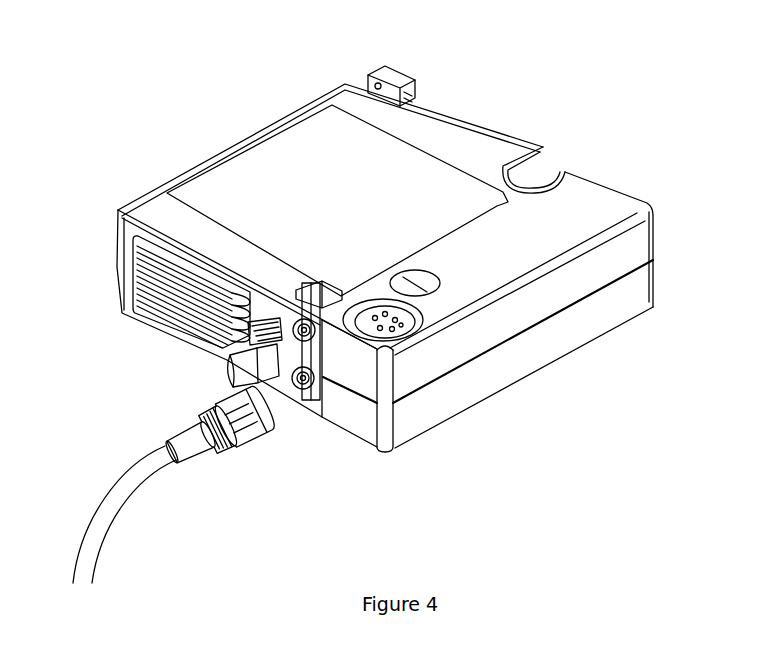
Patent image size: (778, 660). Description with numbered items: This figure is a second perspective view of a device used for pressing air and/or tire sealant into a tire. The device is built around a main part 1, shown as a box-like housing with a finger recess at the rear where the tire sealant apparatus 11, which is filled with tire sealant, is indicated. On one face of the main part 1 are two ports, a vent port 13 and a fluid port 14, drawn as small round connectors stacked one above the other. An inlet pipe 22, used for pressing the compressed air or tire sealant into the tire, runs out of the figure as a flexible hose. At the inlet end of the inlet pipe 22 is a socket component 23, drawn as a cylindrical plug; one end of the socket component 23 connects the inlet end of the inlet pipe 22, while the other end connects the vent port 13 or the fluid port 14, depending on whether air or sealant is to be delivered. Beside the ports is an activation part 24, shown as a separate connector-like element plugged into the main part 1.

The main part 1 is at (442, 90).
The tire sealant apparatus 11 is at (537, 170).
The vent port 13 is at (303, 328).
The fluid port 14 is at (312, 392).
The inlet pipe 22 is at (97, 529).
The socket component 23 is at (240, 423).
The activation part 24 is at (235, 368).